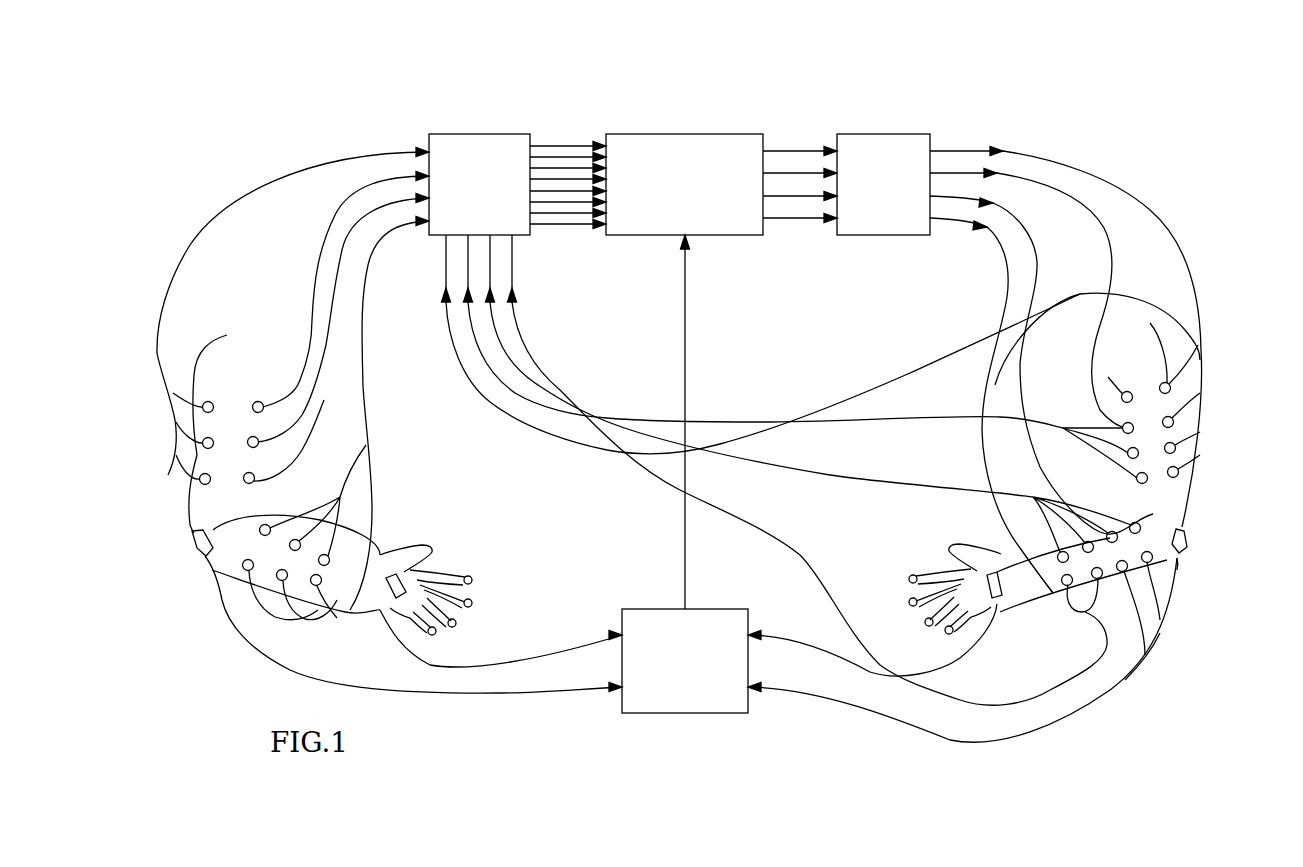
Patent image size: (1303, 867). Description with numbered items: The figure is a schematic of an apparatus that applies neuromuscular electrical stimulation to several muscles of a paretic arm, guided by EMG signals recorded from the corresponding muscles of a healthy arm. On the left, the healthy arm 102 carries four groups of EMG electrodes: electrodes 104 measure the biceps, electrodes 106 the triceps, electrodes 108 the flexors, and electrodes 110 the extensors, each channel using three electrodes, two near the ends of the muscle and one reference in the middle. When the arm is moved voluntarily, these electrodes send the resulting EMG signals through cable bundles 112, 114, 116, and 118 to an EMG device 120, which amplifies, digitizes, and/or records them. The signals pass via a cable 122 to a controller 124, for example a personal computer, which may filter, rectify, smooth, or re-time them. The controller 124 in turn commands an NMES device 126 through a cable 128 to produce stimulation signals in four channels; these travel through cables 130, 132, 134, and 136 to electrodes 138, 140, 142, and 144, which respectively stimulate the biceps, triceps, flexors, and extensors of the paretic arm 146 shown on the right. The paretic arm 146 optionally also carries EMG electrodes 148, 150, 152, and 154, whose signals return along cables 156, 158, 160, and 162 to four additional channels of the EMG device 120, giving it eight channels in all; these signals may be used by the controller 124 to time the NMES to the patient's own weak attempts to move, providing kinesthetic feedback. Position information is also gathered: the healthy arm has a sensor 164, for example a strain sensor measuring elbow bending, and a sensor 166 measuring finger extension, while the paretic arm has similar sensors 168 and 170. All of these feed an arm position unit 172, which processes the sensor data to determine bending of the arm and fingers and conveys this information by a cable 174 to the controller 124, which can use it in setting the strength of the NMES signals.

The healthy arm 102 is at (217, 572).
The electrodes 104 is at (256, 481).
The electrodes 106 is at (200, 480).
The electrodes 108 is at (268, 610).
The electrodes 110 is at (330, 558).
The cable bundle 112 is at (312, 290).
The cable bundle 114 is at (165, 300).
The cable bundle 116 is at (374, 258).
The cable bundle 118 is at (343, 237).
The EMG device 120 is at (458, 134).
The cable 122 is at (548, 138).
The controller 124 is at (672, 134).
The NMES device 126 is at (870, 134).
The cable 128 is at (786, 150).
The cable 130 is at (1092, 212).
The cable 132 is at (1085, 162).
The cable 134 is at (1012, 272).
The cable 136 is at (1030, 238).
The electrodes 138 is at (1122, 426).
The electrodes 140 is at (1175, 422).
The electrodes 142 is at (1147, 660).
The electrodes 144 is at (1043, 590).
The paretic arm 146 is at (1188, 545).
The EMG electrodes 148 is at (1136, 478).
The EMG electrodes 150 is at (1178, 470).
The EMG electrodes 152 is at (1063, 605).
The EMG electrodes 154 is at (1060, 553).
The cable 156 is at (478, 318).
The cable 158 is at (463, 350).
The cable 160 is at (517, 255).
The cable 162 is at (571, 392).
The sensor 164 is at (196, 538).
The sensor 166 is at (402, 584).
The sensor 168 is at (1180, 558).
The sensor 170 is at (992, 573).
The unit 172 is at (683, 713).
The cable 174 is at (686, 540).